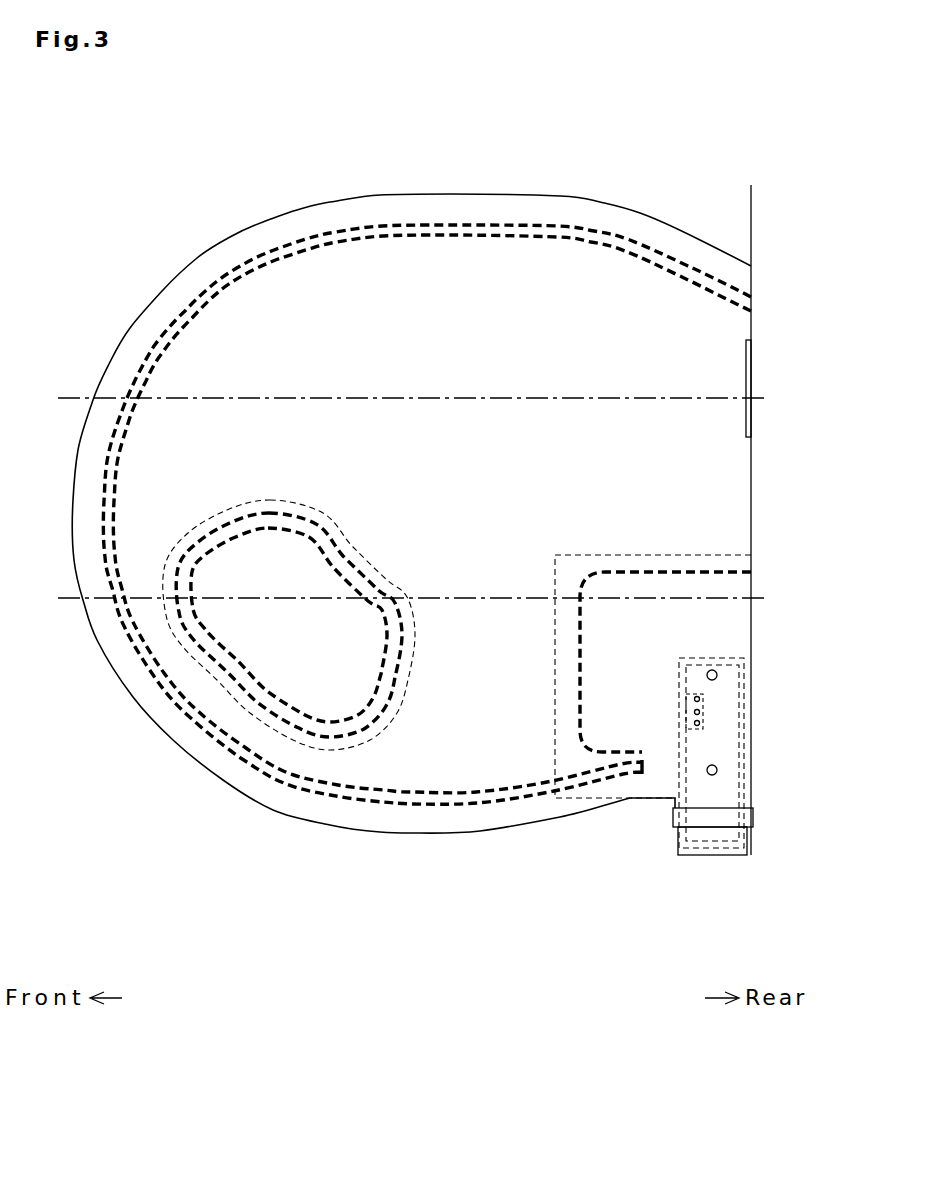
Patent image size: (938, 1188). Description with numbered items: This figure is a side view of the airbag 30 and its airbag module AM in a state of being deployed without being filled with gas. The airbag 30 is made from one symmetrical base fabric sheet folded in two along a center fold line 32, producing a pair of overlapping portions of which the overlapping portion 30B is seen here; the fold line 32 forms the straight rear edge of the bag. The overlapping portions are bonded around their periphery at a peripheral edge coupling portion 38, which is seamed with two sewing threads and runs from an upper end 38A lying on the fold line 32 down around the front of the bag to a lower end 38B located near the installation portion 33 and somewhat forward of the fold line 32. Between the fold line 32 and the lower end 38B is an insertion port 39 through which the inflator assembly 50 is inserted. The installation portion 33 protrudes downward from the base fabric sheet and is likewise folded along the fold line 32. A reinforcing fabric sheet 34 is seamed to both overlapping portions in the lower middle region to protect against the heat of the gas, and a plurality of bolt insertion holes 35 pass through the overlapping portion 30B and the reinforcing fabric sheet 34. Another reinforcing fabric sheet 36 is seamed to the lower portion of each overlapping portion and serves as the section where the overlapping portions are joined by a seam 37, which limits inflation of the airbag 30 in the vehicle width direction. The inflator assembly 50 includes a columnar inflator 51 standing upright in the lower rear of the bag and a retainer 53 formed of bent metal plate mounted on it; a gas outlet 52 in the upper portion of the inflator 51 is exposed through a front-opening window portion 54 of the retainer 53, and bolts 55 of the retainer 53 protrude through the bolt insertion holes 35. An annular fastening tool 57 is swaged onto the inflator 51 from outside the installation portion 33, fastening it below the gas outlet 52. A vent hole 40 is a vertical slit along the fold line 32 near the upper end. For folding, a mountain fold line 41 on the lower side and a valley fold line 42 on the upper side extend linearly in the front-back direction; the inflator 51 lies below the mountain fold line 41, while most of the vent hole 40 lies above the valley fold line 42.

The airbag 30 is at (404, 833).
The overlapping portion 30B is at (435, 196).
The fold line 32 is at (751, 190).
The installation portion 33 is at (678, 848).
The reinforcing fabric sheet 34 is at (586, 556).
The bolt insertion holes 35 is at (707, 675).
The reinforcing fabric sheet 36 is at (413, 680).
The seam 37 is at (318, 548).
The peripheral edge coupling portion 38 is at (524, 237).
The upper end of the peripheral edge coupling portion 38A is at (751, 296).
The lower end of the peripheral edge coupling portion 38B is at (638, 772).
The insertion port 39 is at (733, 855).
The vent hole 40 is at (748, 358).
The mountain fold line 41 is at (65, 600).
The valley fold line 42 is at (62, 396).
The inflator assembly 50 is at (704, 896).
The inflator 51 is at (688, 728).
The gas outlet 52 is at (705, 713).
The retainer 53 is at (705, 658).
The window portion 54 is at (688, 702).
The bolts 55 is at (717, 675).
The fastening tool 57 is at (675, 815).
The airbag module AM is at (327, 865).